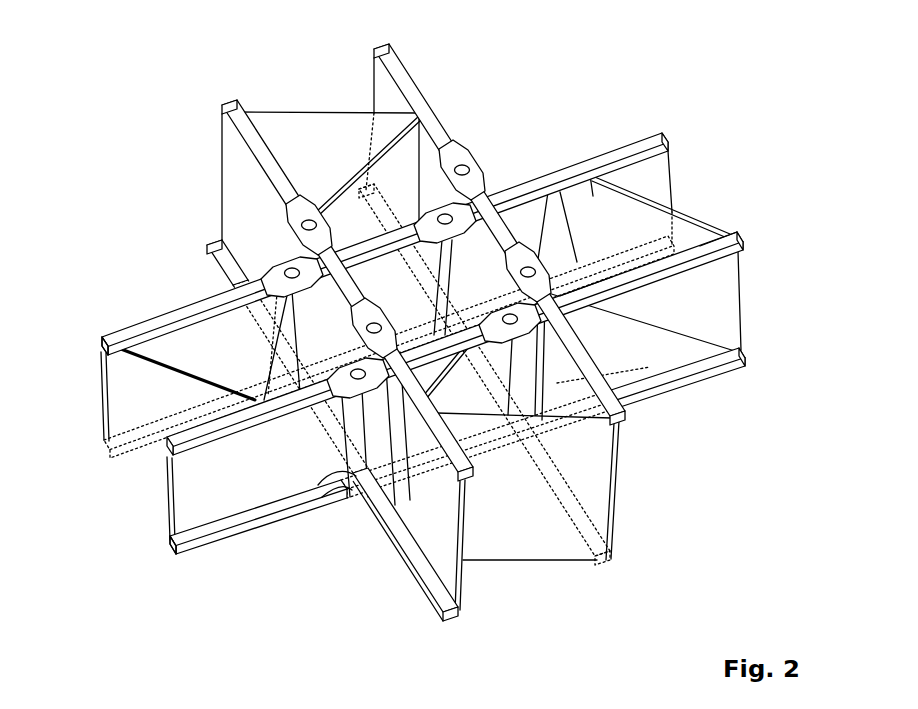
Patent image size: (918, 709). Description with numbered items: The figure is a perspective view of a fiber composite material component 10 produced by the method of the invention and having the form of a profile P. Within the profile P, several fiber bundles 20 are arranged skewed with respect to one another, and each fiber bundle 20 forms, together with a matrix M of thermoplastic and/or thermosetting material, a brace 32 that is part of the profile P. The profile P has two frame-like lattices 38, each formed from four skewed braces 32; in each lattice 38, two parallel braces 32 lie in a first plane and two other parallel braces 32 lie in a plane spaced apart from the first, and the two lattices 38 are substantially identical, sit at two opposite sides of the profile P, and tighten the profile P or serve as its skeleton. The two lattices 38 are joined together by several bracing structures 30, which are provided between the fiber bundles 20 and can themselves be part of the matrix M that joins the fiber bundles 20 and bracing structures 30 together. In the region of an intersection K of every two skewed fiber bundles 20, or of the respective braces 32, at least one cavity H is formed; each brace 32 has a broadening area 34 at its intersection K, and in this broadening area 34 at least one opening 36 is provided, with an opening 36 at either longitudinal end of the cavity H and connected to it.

The fiber composite material component 10 is at (402, 319).
The fiber bundle 20 is at (233, 108).
The bracing structure 30 is at (272, 130).
The brace 32 is at (117, 333).
The broadening area 34 is at (503, 190).
The opening 36 is at (303, 222).
The frame-like lattice 38 is at (100, 338).
The cavity H is at (505, 195).
The intersection K is at (316, 207).
The matrix M is at (735, 250).
The profile P is at (131, 270).